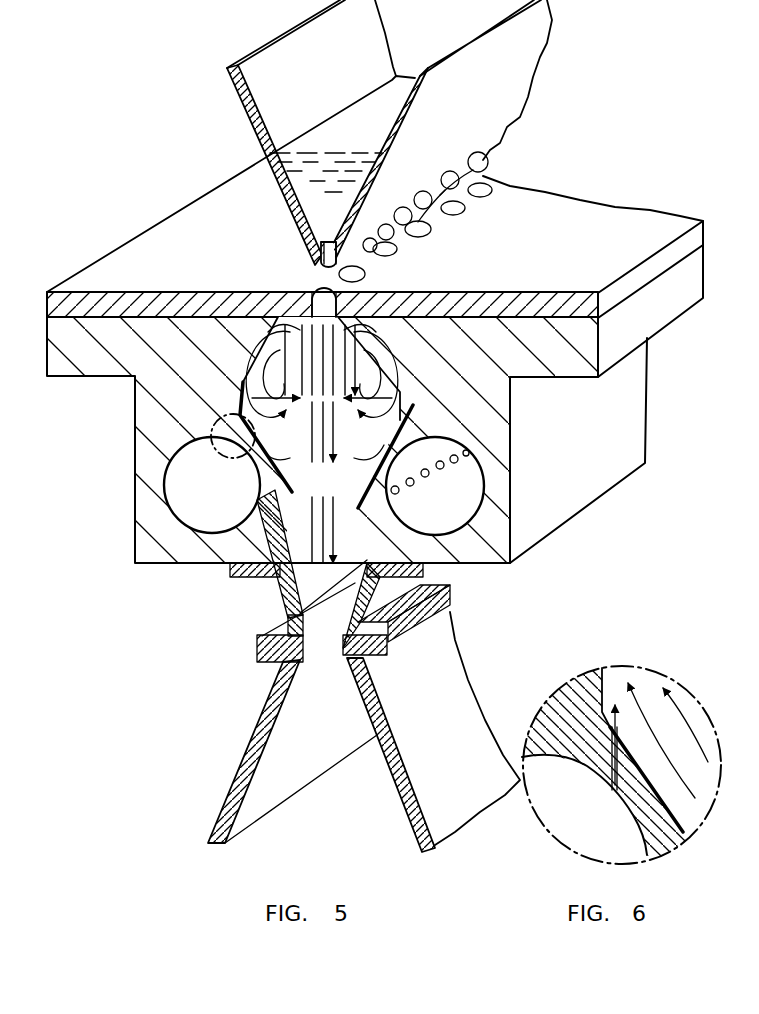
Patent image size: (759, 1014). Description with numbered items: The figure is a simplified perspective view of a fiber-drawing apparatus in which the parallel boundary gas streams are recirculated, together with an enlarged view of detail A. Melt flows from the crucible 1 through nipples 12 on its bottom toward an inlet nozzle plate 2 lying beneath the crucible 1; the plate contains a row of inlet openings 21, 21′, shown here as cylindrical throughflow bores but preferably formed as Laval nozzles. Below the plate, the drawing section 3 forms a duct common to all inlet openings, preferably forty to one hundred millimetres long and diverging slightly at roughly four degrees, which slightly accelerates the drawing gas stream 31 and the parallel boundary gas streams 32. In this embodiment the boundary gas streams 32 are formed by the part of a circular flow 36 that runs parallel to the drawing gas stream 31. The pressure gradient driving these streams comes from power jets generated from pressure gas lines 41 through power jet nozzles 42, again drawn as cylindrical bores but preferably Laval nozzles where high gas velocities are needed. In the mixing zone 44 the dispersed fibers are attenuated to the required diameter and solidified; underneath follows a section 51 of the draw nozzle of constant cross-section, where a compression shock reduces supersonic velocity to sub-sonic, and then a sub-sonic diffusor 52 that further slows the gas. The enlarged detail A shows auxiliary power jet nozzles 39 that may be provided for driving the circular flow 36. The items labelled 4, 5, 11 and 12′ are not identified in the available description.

In FIG. 5, the crucible 1 is at (500, 78).
In FIG. 5, the inlet nozzle plate 2 is at (178, 288).
In FIG. 5, the drawing section 3 is at (133, 410).
In FIG. 5, the lower housing block 4 is at (150, 572).
In FIG. 5, the casting nozzle 5 is at (253, 656).
In FIG. 5, the tundish 11 is at (312, 177).
In FIG. 5, the nipples 12 is at (314, 257).
In FIG. 5, the gas jet 12′ is at (385, 226).
In FIG. 5, the inlet openings 21 is at (312, 296).
In FIG. 5, the inlet opening 21′ is at (365, 274).
In FIG. 5, the drawing gas stream 31 is at (300, 335).
In FIG. 5, the parallel boundary gas streams 32 is at (362, 397).
In FIG. 5, the circular flow 36 is at (425, 398).
In FIG. 6, the auxiliary power jet nozzles 39 is at (610, 788).
In FIG. 5, the pressure gas lines 41 is at (184, 487).
In FIG. 5, the power jet nozzles 42 is at (404, 487).
In FIG. 5, the mixing zone 44 is at (300, 588).
In FIG. 5, the section of the draw nozzle having a constant cross-section 51 is at (367, 628).
In FIG. 5, the sub-sonic diffusor 52 is at (433, 727).
In FIG. 5, the detail A is at (210, 449).
In FIG. 6, the detail A is at (682, 684).